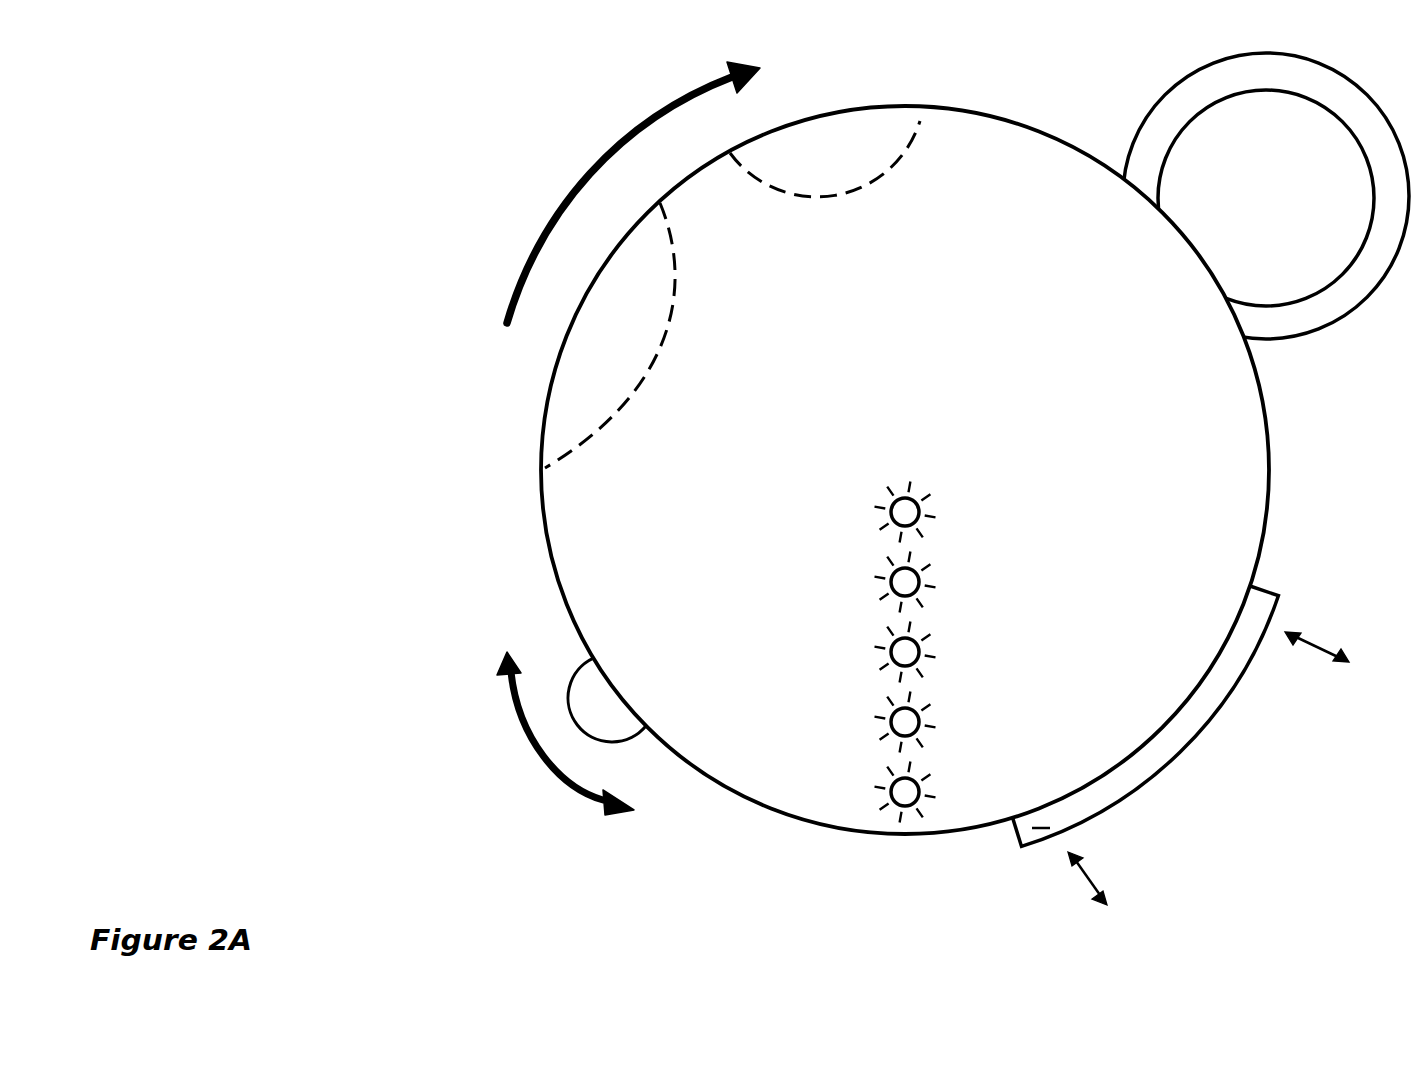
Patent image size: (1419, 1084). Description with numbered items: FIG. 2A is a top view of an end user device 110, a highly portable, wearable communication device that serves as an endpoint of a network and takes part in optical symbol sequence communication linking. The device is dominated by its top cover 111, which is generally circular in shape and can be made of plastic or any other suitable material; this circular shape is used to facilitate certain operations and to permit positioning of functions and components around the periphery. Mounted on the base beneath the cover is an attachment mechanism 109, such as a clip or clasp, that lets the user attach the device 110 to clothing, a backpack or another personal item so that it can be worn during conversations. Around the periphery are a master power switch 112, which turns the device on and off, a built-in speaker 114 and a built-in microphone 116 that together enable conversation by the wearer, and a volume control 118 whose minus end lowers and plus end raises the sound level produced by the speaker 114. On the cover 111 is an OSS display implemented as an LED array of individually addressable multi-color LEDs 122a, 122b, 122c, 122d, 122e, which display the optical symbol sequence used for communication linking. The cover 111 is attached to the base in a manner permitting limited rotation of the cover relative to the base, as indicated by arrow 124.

The attachment mechanism 109 is at (1187, 77).
The end user device 110 is at (335, 563).
The top cover 111 is at (1012, 299).
The master power switch 112 is at (637, 737).
The speaker 114 is at (543, 425).
The microphone 116 is at (885, 106).
The volume control 118 is at (1215, 725).
The multi-color LED 122a is at (918, 500).
The multi-color LED 122b is at (918, 570).
The multi-color LED 122c is at (892, 667).
The multi-color LED 122d is at (892, 737).
The multi-color LED 122e is at (920, 803).
The arrow 124 is at (655, 103).